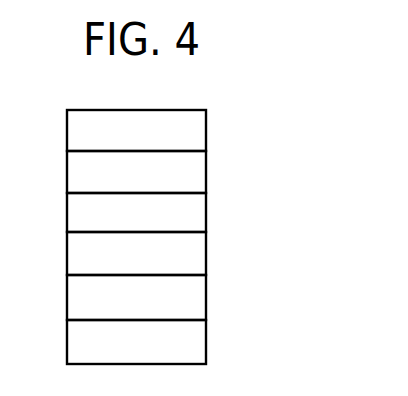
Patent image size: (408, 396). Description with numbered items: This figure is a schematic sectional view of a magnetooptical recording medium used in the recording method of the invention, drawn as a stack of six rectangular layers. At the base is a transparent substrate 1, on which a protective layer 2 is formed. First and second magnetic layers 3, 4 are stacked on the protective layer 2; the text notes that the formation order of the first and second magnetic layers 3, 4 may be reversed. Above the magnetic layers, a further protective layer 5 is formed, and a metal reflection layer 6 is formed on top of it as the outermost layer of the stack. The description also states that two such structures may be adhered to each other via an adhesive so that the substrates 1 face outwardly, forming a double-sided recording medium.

The transparent substrate 1 is at (207, 345).
The protective layer 2 is at (207, 295).
The first magnetic layer 3 is at (207, 256).
The second magnetic layer 4 is at (207, 213).
The protective layer 5 is at (207, 170).
The metal reflection layer 6 is at (207, 122).